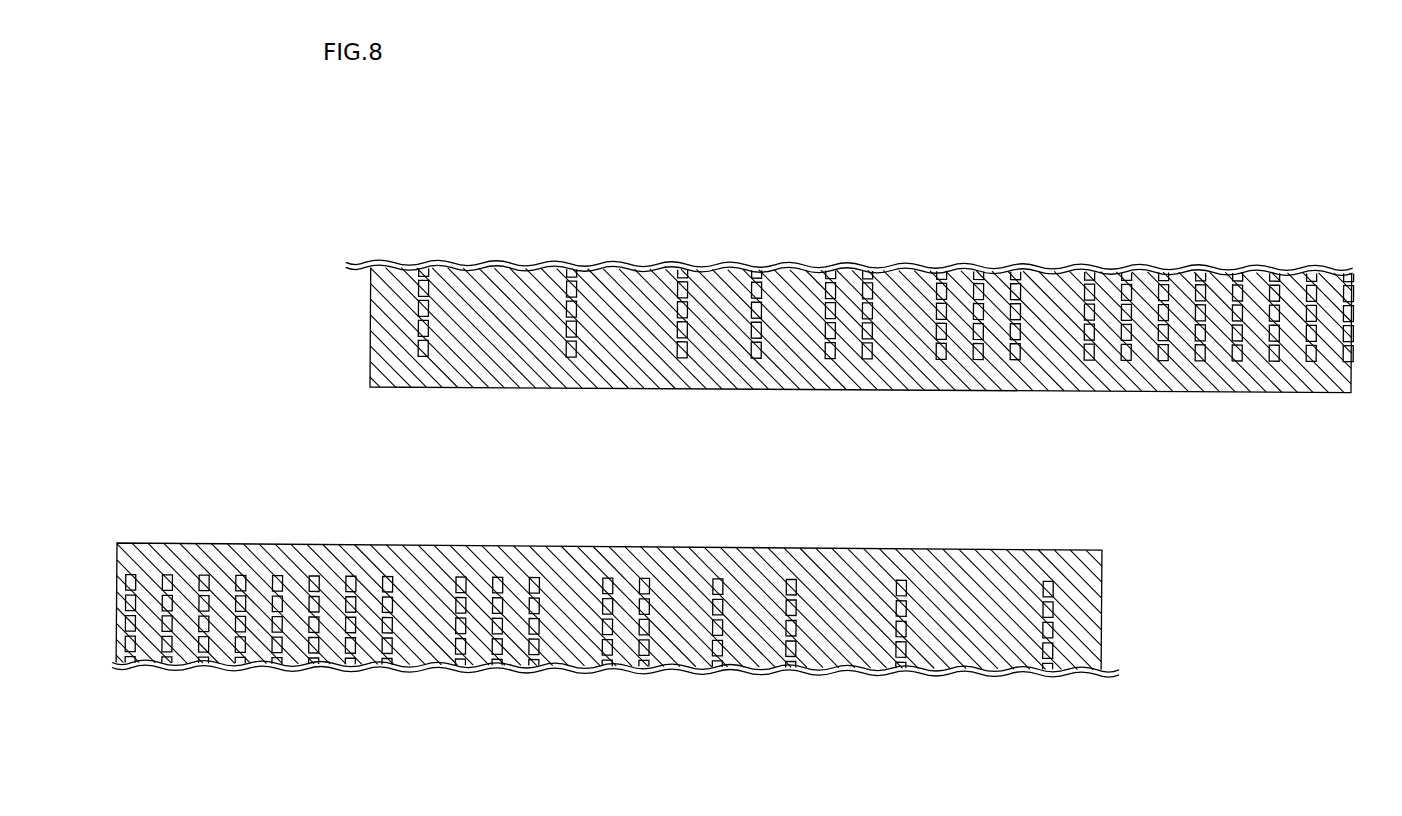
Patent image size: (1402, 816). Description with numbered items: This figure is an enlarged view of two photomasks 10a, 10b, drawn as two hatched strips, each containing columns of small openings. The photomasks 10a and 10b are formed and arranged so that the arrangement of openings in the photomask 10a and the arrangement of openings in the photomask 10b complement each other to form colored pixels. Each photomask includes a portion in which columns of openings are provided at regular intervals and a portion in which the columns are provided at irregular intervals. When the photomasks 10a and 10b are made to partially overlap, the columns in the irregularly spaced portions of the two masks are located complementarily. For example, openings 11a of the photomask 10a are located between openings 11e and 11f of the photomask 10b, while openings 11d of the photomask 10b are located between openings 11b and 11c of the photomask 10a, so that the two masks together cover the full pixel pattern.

The photomask 10a is at (170, 530).
The photomask 10b is at (402, 252).
The openings 11a is at (1049, 665).
The openings 11b is at (457, 647).
The openings 11c is at (385, 647).
The openings 11d is at (427, 349).
The openings 11e is at (1016, 360).
The openings 11f is at (1090, 360).